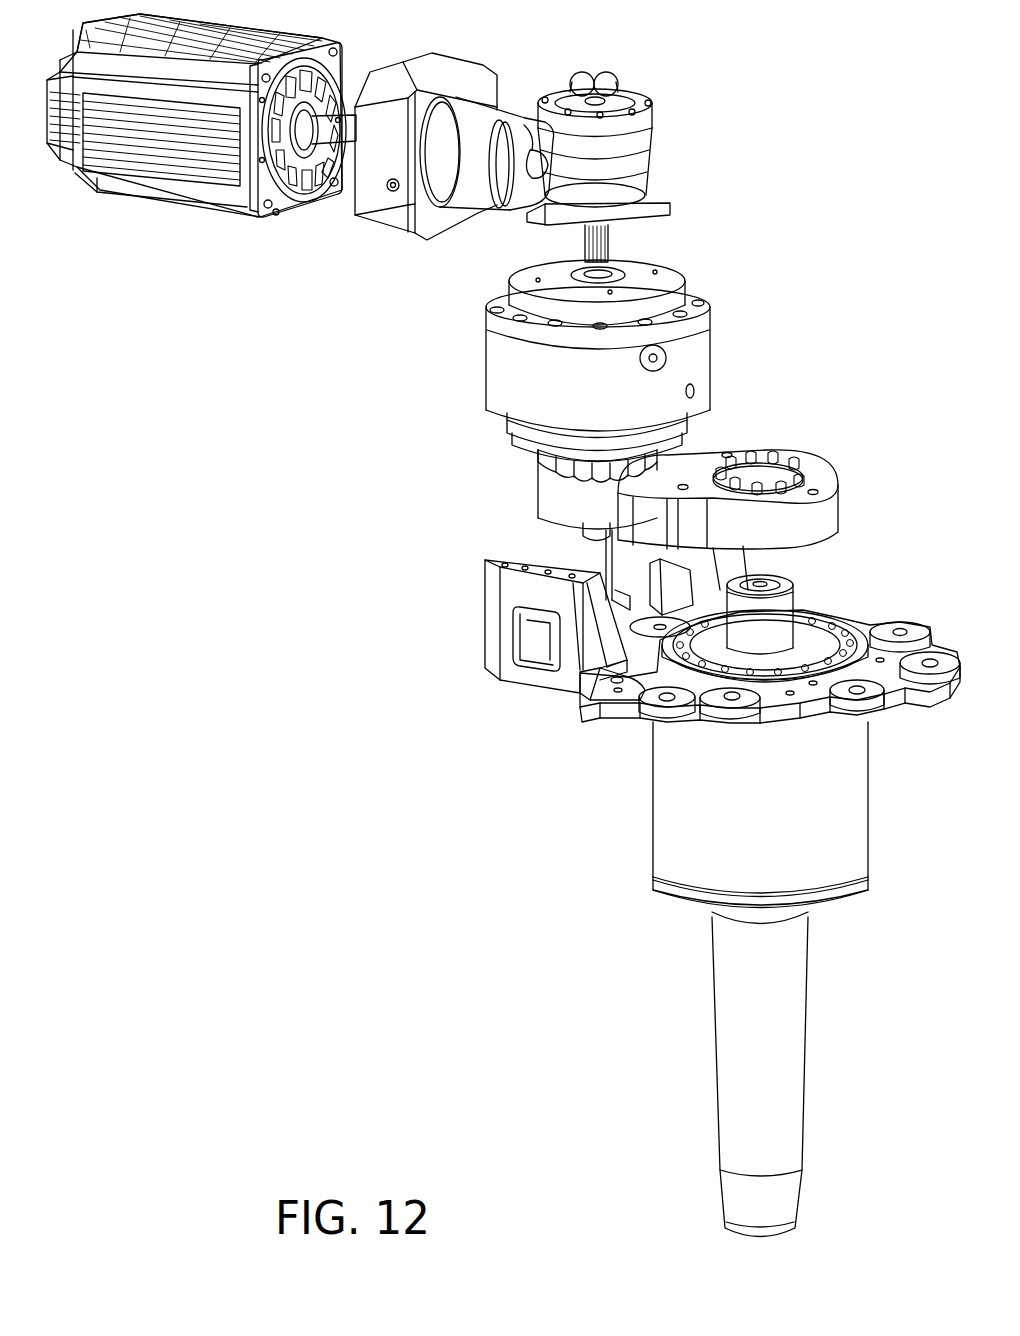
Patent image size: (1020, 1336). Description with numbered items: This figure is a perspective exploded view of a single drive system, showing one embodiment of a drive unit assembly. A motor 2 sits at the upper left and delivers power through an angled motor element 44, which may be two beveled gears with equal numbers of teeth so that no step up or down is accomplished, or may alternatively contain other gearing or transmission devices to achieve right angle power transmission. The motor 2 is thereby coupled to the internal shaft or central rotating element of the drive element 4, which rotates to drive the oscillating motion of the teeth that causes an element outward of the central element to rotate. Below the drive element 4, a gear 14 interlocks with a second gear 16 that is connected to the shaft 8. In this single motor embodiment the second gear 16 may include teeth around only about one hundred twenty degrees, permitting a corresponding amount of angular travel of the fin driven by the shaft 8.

The motor 2 is at (247, 213).
The angled motor element 44 is at (497, 73).
The drive element 4 is at (706, 356).
The gear 14 is at (540, 492).
The second gear 16 is at (743, 450).
The shaft 8 is at (733, 622).